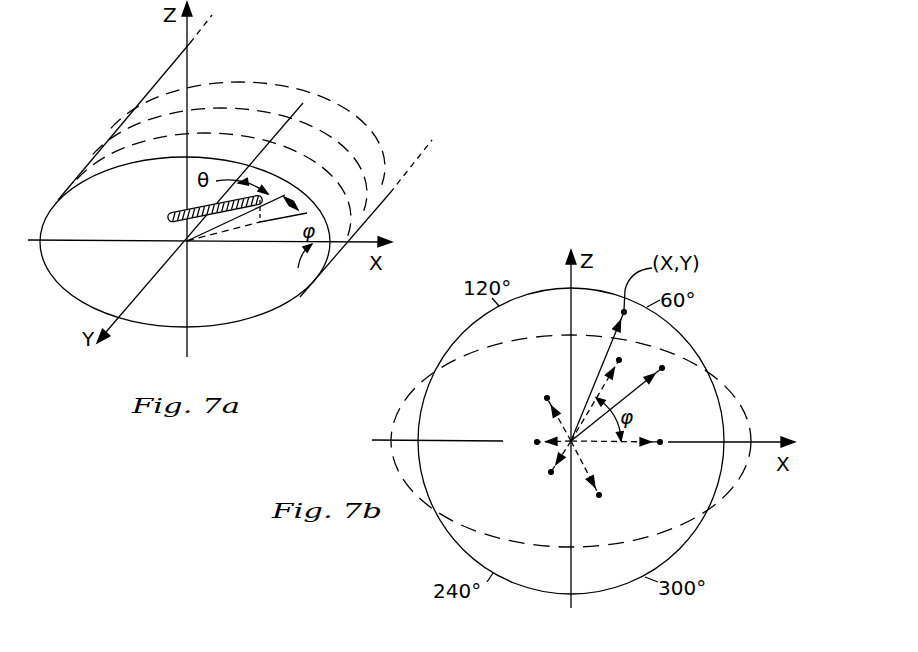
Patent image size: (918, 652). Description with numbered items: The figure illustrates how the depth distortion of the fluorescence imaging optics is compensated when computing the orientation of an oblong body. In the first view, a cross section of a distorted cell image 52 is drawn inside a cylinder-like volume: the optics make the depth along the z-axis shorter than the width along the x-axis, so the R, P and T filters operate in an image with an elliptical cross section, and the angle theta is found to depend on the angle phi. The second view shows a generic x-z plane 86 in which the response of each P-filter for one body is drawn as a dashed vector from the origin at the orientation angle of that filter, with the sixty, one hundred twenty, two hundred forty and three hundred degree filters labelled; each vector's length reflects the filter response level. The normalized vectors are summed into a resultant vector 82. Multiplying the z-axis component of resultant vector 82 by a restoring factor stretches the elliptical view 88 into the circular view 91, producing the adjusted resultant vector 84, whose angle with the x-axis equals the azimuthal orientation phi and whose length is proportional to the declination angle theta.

In FIG. 7A, the distorted cell image 52 is at (392, 197).
In FIG. 7B, the resultant vector 82 is at (643, 384).
In FIG. 7B, the adjusted resultant vector 84 is at (600, 366).
In FIG. 7B, the generic x-z plane 86 is at (575, 428).
In FIG. 7B, the elliptical view 88 is at (413, 385).
In FIG. 7B, the circular view 91 is at (440, 546).